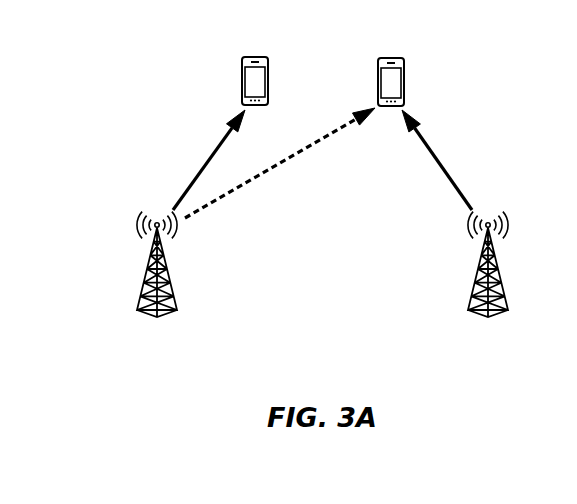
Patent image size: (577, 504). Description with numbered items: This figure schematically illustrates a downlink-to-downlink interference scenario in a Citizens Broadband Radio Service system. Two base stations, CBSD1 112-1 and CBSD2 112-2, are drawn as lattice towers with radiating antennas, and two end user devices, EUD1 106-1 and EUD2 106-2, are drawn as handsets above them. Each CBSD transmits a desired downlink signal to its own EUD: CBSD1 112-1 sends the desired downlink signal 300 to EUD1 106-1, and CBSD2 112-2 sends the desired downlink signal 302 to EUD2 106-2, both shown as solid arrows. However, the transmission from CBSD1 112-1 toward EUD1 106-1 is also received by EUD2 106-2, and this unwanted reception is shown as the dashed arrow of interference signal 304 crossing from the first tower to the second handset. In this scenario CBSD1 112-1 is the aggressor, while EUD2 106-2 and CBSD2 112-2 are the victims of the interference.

The EUD1 106-1 is at (251, 57).
The EUD2 106-2 is at (399, 58).
The CBSD1 112-1 is at (153, 316).
The CBSD2 112-2 is at (495, 316).
The desired downlink signal 300 is at (204, 166).
The desired downlink signal 302 is at (447, 172).
The interference signal 304 is at (272, 168).